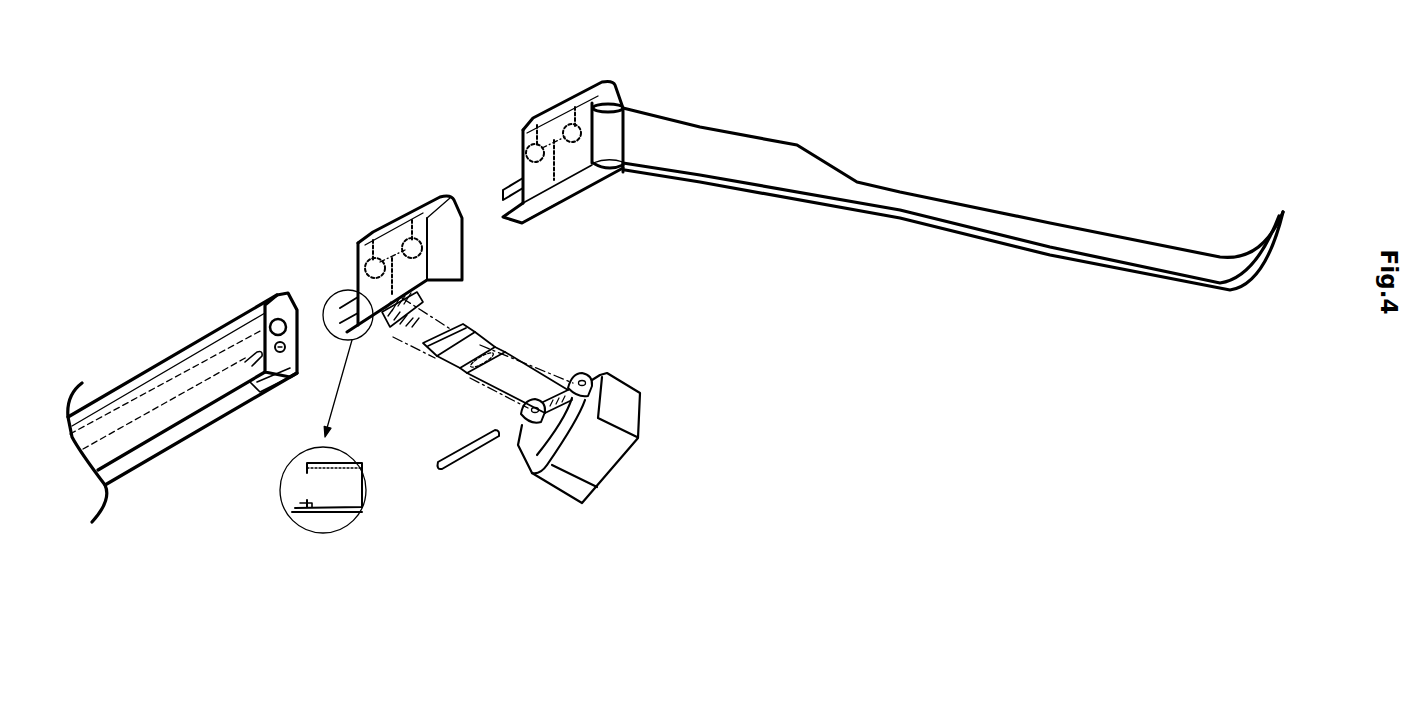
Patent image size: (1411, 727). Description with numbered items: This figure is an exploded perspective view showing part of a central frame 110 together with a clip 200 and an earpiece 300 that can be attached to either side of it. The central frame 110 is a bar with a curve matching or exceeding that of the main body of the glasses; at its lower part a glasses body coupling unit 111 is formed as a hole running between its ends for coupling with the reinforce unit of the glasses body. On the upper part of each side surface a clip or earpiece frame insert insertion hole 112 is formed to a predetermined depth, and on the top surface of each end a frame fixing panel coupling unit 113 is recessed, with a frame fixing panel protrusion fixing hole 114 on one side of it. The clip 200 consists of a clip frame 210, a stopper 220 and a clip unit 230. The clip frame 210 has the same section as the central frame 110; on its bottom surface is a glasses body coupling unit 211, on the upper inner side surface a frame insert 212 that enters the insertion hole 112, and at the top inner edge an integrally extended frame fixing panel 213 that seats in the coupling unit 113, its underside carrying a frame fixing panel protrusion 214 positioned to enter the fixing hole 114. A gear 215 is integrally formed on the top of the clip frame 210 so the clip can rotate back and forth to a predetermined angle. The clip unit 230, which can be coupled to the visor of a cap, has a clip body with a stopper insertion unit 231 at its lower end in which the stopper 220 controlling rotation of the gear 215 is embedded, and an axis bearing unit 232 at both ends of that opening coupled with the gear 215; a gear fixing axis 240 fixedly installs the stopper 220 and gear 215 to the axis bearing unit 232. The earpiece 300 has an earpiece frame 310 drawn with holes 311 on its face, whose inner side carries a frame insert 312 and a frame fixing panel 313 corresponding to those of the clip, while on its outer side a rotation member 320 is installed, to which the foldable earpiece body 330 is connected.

The central frame 110 is at (192, 402).
The glasses body coupling unit 111 is at (274, 321).
The clip or earpiece frame insert insertion hole 112 is at (295, 392).
The frame fixing panel coupling unit 113 is at (278, 389).
The frame fixing panel protrusion fixing hole 114 is at (258, 400).
The clip 200 is at (464, 363).
The clip frame 210 is at (338, 363).
The glasses body coupling unit 211 is at (363, 257).
The frame insert 212 is at (340, 303).
The frame fixing panel 213 is at (346, 333).
The frame fixing panel protrusion 214 is at (308, 504).
The gear 215 is at (391, 332).
The stopper 220 is at (507, 362).
The clip unit 230 is at (563, 411).
The stopper insertion unit 231 is at (546, 392).
The axis bearing unit 232 is at (521, 426).
The gear fixing axis 240 is at (443, 470).
The earpiece 300 is at (864, 190).
The earpiece frame 310 is at (534, 179).
The hole 311 is at (537, 152).
The frame insert 312 is at (503, 188).
The frame fixing panel 313 is at (520, 222).
The rotation member 320 is at (607, 130).
The earpiece body 330 is at (893, 202).